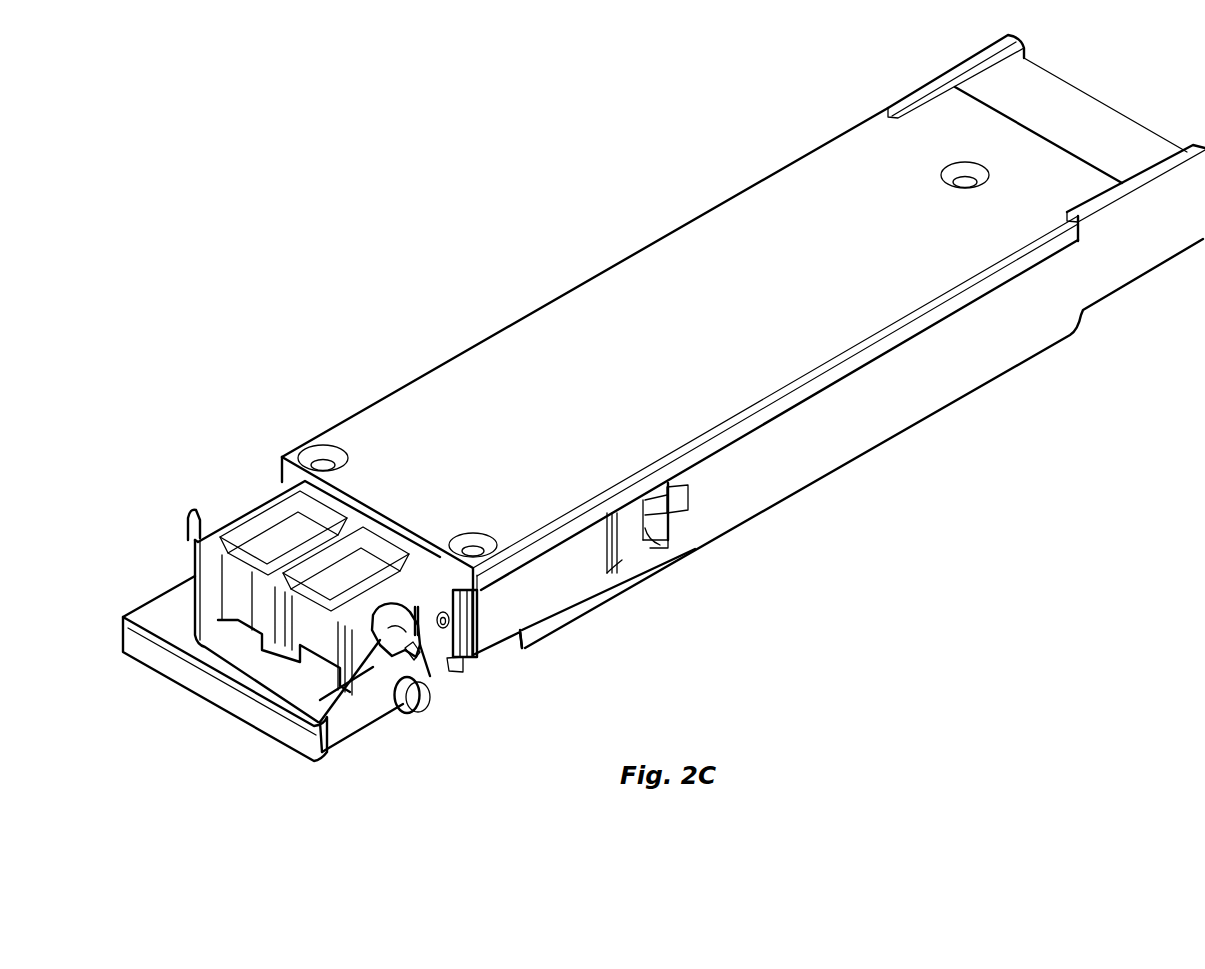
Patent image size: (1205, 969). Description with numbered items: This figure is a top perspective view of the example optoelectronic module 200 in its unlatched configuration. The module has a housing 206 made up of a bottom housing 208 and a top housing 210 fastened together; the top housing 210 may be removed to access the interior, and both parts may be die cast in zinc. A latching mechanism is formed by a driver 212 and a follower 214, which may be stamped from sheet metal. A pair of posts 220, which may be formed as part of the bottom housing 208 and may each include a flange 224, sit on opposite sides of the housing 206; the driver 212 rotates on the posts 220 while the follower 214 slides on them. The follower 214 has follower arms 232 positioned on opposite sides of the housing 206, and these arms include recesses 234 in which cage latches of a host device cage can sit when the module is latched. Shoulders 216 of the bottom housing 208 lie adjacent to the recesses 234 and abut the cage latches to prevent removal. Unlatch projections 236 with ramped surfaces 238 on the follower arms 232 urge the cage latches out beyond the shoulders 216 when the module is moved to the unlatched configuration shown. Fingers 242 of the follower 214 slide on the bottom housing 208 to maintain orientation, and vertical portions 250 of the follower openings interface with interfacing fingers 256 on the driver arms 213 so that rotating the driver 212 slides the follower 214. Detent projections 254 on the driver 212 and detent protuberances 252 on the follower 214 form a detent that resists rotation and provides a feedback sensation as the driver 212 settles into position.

The optoelectronic module 200 is at (243, 140).
The housing 206 is at (830, 135).
The bottom housing 208 is at (890, 419).
The top housing 210 is at (643, 359).
The driver 212 is at (233, 705).
The driver arms 213 is at (360, 745).
The follower 214 is at (370, 725).
The shoulders 216 is at (672, 540).
The posts 220 is at (418, 700).
The flange 224 is at (347, 740).
The follower arms 232 is at (592, 571).
The recesses 234 is at (652, 534).
The unlatch projections 236 is at (690, 503).
The ramped surfaces 238 is at (672, 517).
The fingers 242 is at (186, 548).
The vertical portions 250 is at (421, 624).
The detent protuberances 252 is at (449, 617).
The detent projections 254 is at (186, 526).
The interfacing fingers 256 is at (465, 668).